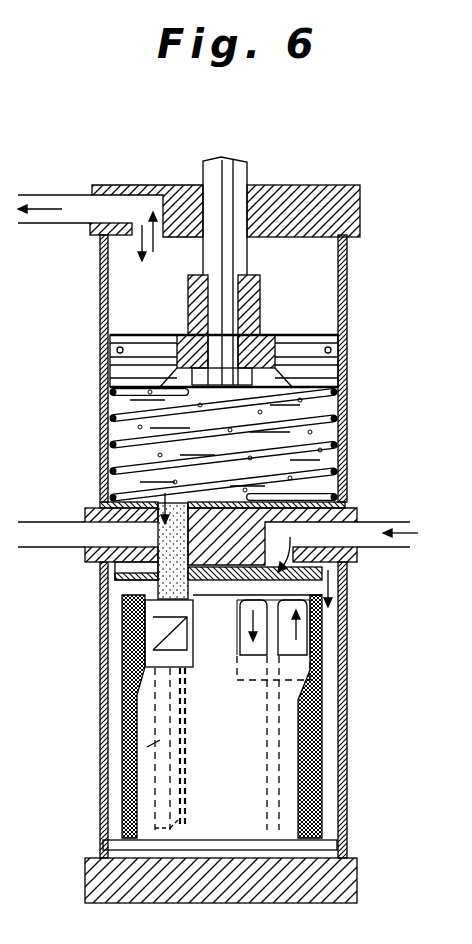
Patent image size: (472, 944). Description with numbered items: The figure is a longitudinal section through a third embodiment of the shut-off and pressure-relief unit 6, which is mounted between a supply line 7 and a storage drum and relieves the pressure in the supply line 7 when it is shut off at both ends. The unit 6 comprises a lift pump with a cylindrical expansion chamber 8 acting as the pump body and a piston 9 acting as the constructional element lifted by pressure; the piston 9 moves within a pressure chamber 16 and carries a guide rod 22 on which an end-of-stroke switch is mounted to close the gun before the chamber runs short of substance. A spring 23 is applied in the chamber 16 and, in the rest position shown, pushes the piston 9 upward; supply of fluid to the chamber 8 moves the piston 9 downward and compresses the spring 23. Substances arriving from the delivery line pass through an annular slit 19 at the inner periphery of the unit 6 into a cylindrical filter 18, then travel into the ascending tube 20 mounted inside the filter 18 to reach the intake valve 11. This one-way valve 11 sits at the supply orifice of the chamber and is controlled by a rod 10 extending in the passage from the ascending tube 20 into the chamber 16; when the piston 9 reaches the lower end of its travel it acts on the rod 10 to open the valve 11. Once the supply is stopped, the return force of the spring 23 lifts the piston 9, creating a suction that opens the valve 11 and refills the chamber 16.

The shut-off and pressure-relief unit 6 is at (326, 670).
The supply line 7 is at (72, 530).
The cylindrical expansion chamber 8 is at (348, 316).
The piston 9 is at (324, 362).
The rod 10 is at (167, 567).
The intake valve 11 is at (122, 647).
The pressure chamber 16 is at (343, 457).
The cylindrical filter 18 is at (325, 720).
The annular slit 19 is at (327, 783).
The ascending tube 20 is at (113, 762).
The guide rod 22 is at (248, 185).
The spring 23 is at (118, 442).